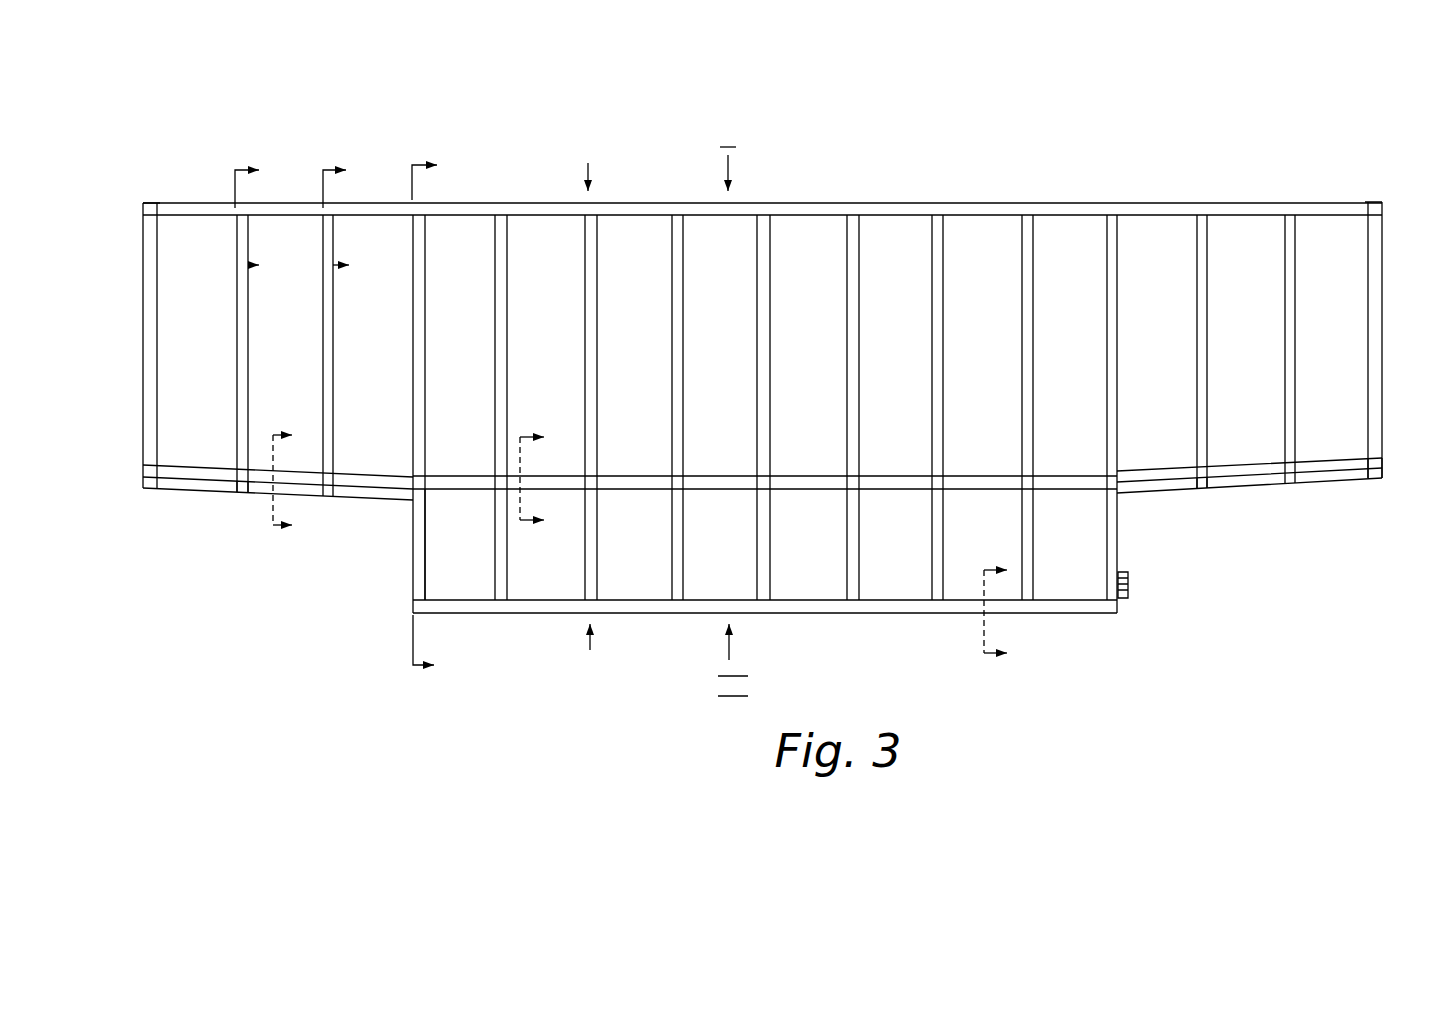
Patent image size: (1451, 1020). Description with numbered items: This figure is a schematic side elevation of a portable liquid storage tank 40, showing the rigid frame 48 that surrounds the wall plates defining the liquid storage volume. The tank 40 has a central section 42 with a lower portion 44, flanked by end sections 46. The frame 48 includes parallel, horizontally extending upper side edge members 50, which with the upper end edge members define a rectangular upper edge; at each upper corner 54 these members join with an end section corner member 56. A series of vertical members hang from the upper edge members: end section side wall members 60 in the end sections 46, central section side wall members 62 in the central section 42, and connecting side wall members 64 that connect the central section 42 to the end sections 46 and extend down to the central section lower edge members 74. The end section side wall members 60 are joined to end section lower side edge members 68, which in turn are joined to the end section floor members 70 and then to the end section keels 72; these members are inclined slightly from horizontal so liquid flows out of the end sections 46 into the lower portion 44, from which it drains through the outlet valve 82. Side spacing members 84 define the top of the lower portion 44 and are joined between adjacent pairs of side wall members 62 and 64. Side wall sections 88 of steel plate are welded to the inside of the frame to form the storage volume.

The portable liquid storage tank 40 is at (905, 192).
The central section 42 is at (782, 195).
The lower portion 44 is at (810, 580).
The end sections 46 is at (182, 265).
The rigid frame 48 is at (1382, 270).
The upper side edge members 50 is at (207, 208).
The upper corner 54 is at (143, 205).
The end section corner member 56 is at (143, 327).
The end section side wall members 60 is at (243, 240).
The central section side wall members 62 is at (505, 243).
The connecting side wall members 64 is at (425, 237).
The end section lower side edge members 68 is at (188, 470).
The end section floor members 70 is at (244, 485).
The end section keels 72 is at (217, 484).
The central section lower edge members 74 is at (477, 607).
The outlet valve 82 is at (1128, 590).
The side spacing members 84 is at (648, 483).
The side wall sections 88 is at (203, 360).